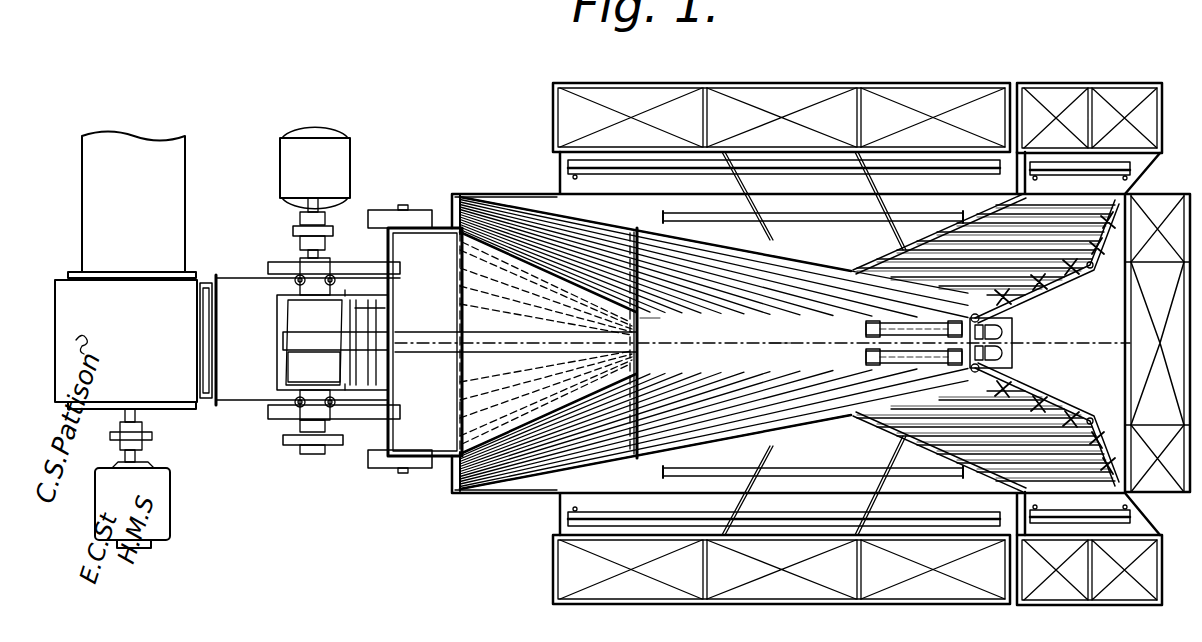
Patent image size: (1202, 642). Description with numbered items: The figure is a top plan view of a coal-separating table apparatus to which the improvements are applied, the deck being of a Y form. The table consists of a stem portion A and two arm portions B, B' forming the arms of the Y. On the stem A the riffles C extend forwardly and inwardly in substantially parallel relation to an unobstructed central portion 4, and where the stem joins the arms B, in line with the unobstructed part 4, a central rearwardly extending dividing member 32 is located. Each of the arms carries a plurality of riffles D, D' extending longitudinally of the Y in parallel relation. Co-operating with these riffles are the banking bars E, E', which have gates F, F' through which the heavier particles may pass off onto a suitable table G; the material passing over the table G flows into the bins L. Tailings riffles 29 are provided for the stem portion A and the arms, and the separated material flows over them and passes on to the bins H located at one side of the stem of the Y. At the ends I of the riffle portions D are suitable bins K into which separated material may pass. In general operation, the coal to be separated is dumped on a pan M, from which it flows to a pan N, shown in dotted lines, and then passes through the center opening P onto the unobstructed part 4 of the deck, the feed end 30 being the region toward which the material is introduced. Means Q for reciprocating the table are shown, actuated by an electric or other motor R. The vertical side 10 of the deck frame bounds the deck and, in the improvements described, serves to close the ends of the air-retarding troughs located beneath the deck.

The unobstructed central portion 4 is at (767, 351).
The vertical side of the deck frame 10 is at (495, 180).
The tailings riffles 29 is at (965, 478).
The feed end 30 is at (566, 339).
The central rearwardly extending dividing member 32 is at (887, 339).
The stem portion of the Y A is at (660, 326).
The arms of the Y B is at (984, 244).
The lower plate B' is at (984, 441).
The riffles C is at (723, 268).
The riffles D is at (831, 204).
The lower brace D' is at (826, 482).
The banking bars E is at (1047, 266).
The lower contact arm E' is at (1047, 420).
The gates F is at (1055, 260).
The lower contact springs F' is at (1055, 423).
The table G is at (1015, 343).
The bins H is at (781, 343).
The ends of the stem portions I is at (849, 343).
The bins K is at (1089, 344).
The bins L is at (1120, 343).
The pan M is at (759, 342).
The pan N is at (463, 273).
The center opening P is at (617, 343).
The means for reciprocating the table Q is at (298, 367).
The motor R is at (135, 340).